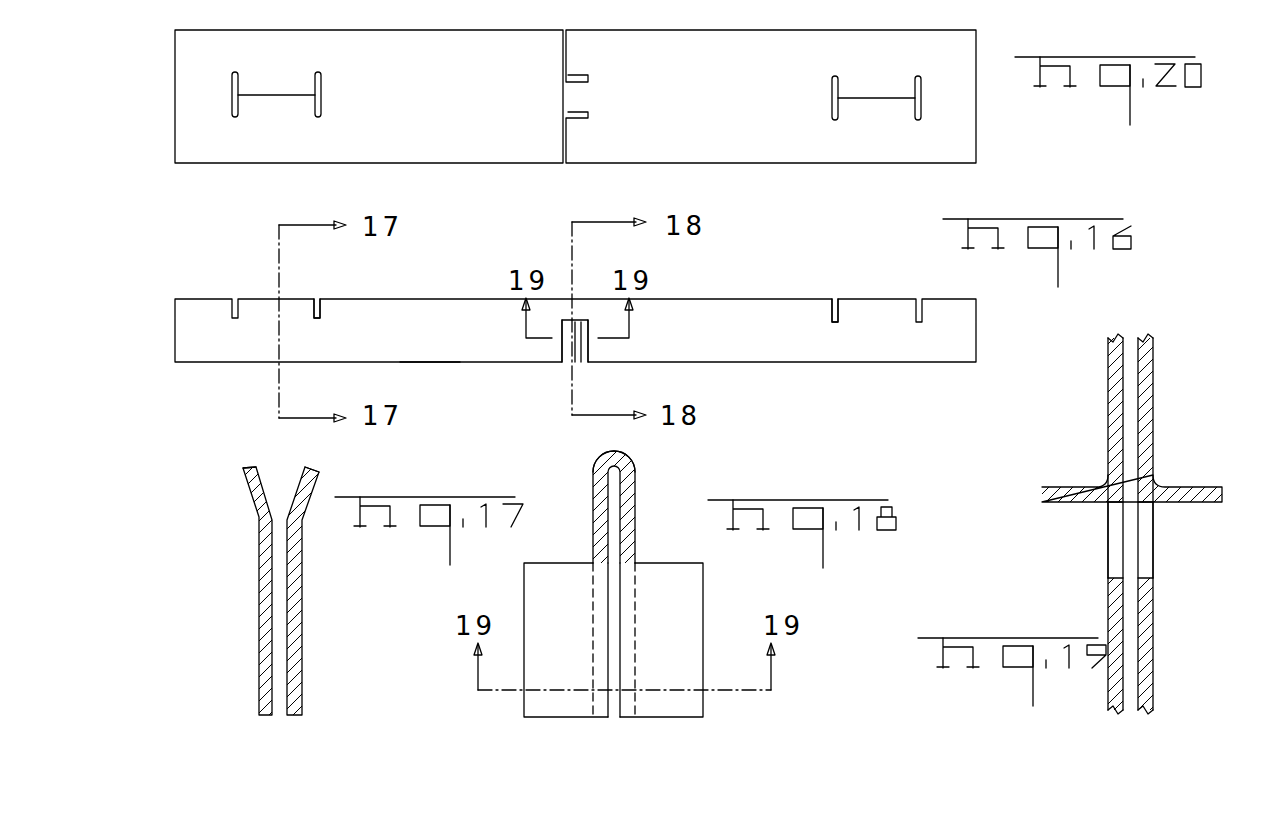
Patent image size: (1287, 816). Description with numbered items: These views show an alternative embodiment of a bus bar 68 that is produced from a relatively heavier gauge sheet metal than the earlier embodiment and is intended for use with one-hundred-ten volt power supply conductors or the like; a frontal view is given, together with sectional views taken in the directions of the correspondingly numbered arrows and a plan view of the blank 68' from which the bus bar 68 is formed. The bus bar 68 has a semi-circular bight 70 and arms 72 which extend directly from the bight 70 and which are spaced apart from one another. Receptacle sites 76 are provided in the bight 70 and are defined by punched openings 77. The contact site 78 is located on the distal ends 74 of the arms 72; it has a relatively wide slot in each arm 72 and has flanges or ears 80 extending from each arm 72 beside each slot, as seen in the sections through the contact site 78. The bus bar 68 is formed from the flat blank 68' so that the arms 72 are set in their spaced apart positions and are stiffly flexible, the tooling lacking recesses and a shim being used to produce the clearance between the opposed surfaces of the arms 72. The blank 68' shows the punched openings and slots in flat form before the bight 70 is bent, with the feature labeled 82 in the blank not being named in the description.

In FIG. 16, the bus bar 68 is at (618, 330).
In FIG. 20, the blank 68' is at (636, 103).
In FIG. 18, the semi-circular bight 70 is at (622, 452).
In FIG. 17, the arms 72 is at (305, 605).
In FIG. 18, the arms 72 is at (636, 525).
In FIG. 19, the arms 72 is at (1155, 625).
In FIG. 16, the distal ends 74 is at (413, 363).
In FIG. 16, the receptacle sites 76 is at (870, 298).
In FIG. 17, the receptacle sites 76 is at (230, 487).
In FIG. 16, the punched openings 77 is at (320, 305).
In FIG. 16, the contact site 78 is at (570, 362).
In FIG. 19, the contact site 78 is at (1148, 540).
In FIG. 16, the flanges or ears 80 is at (587, 330).
In FIG. 18, the flanges or ears 80 is at (685, 592).
In FIG. 19, the flanges or ears 80 is at (1193, 487).
In FIG. 20, the slot connecting bar 82 is at (875, 98).